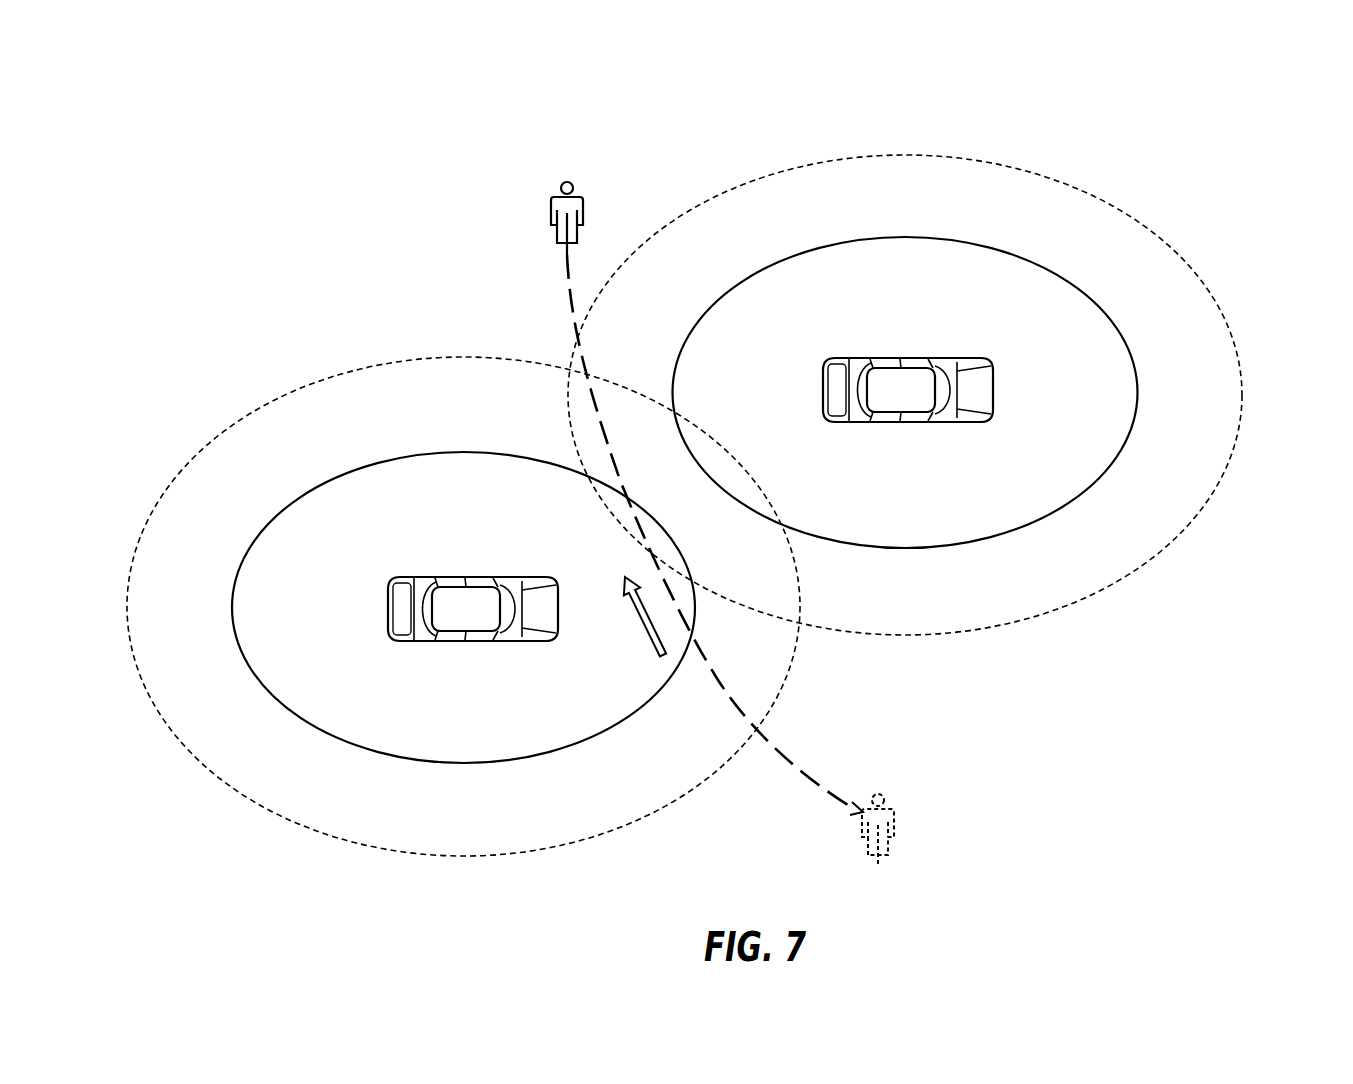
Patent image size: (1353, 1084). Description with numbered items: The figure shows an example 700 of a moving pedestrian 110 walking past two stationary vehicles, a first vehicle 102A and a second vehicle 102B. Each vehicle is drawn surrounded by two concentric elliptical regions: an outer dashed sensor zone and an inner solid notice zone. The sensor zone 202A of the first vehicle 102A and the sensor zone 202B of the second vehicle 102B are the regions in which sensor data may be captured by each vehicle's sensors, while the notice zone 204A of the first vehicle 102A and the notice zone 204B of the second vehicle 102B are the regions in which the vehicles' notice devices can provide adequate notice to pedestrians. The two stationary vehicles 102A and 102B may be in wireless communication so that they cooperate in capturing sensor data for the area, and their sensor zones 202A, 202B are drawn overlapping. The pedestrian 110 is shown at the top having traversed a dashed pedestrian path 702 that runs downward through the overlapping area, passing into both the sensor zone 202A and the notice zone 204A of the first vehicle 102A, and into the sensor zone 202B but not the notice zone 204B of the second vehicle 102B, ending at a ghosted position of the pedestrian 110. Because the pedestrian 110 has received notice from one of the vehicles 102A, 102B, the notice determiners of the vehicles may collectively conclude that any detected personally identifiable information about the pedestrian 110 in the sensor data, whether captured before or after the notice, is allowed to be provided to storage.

The example 700 is at (225, 74).
The pedestrian 110 is at (580, 173).
The pedestrian path 702 is at (567, 275).
The first vehicle 102A is at (488, 618).
The second vehicle 102B is at (926, 400).
The sensor zone 202A is at (401, 362).
The sensor zone 202B is at (1118, 200).
The notice zone 204A is at (355, 471).
The notice zone 204B is at (1126, 340).